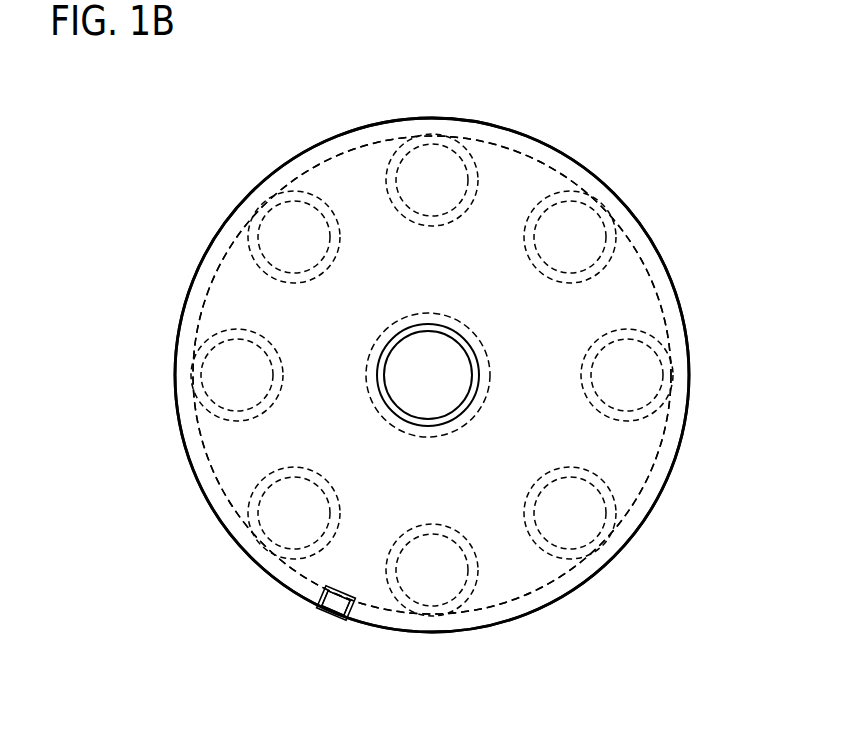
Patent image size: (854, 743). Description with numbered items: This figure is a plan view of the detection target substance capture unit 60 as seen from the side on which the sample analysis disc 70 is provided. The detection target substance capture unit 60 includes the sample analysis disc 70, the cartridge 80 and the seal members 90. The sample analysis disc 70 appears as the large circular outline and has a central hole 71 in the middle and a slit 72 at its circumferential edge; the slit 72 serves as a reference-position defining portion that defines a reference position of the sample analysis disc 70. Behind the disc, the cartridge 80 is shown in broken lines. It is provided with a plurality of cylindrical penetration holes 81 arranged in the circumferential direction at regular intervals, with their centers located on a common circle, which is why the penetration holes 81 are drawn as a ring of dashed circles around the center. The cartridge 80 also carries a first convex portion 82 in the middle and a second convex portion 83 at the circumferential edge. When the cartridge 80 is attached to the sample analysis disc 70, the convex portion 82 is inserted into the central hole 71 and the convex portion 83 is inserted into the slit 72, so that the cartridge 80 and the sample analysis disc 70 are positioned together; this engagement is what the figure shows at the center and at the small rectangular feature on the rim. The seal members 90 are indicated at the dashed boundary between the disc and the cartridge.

The detection target substance capture unit 60 is at (547, 112).
The sample analysis disc 70 is at (655, 242).
The cartridge 80 is at (657, 286).
The seal members 90 is at (599, 195).
The penetration holes 81 is at (324, 256).
The convex portion 82 is at (372, 377).
The central hole 71 is at (452, 347).
The slit 72 is at (330, 607).
The convex portion 83 is at (339, 608).